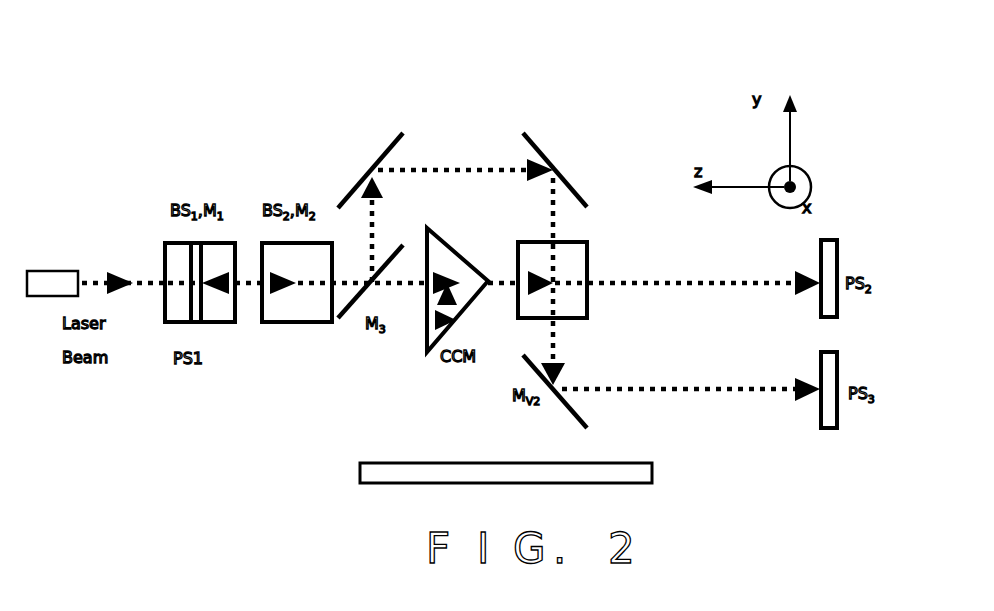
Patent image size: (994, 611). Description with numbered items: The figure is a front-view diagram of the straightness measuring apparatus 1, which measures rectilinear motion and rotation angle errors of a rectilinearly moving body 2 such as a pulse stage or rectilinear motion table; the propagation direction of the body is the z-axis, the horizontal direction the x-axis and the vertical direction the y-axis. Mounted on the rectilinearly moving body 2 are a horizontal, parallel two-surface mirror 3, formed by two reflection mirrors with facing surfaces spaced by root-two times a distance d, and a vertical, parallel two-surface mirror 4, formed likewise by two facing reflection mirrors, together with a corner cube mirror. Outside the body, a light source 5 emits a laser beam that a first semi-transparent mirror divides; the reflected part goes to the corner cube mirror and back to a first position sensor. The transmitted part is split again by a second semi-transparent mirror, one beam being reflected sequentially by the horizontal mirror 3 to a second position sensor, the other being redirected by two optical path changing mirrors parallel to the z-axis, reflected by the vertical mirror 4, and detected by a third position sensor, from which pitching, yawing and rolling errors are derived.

The straightness measuring apparatus 1 is at (502, 145).
The rectilinear moving body 2 is at (623, 463).
The horizontal, parallel two-surface mirror 3 is at (588, 302).
The vertical, parallel two-surface mirror 4 is at (592, 195).
The light source 5 is at (47, 270).